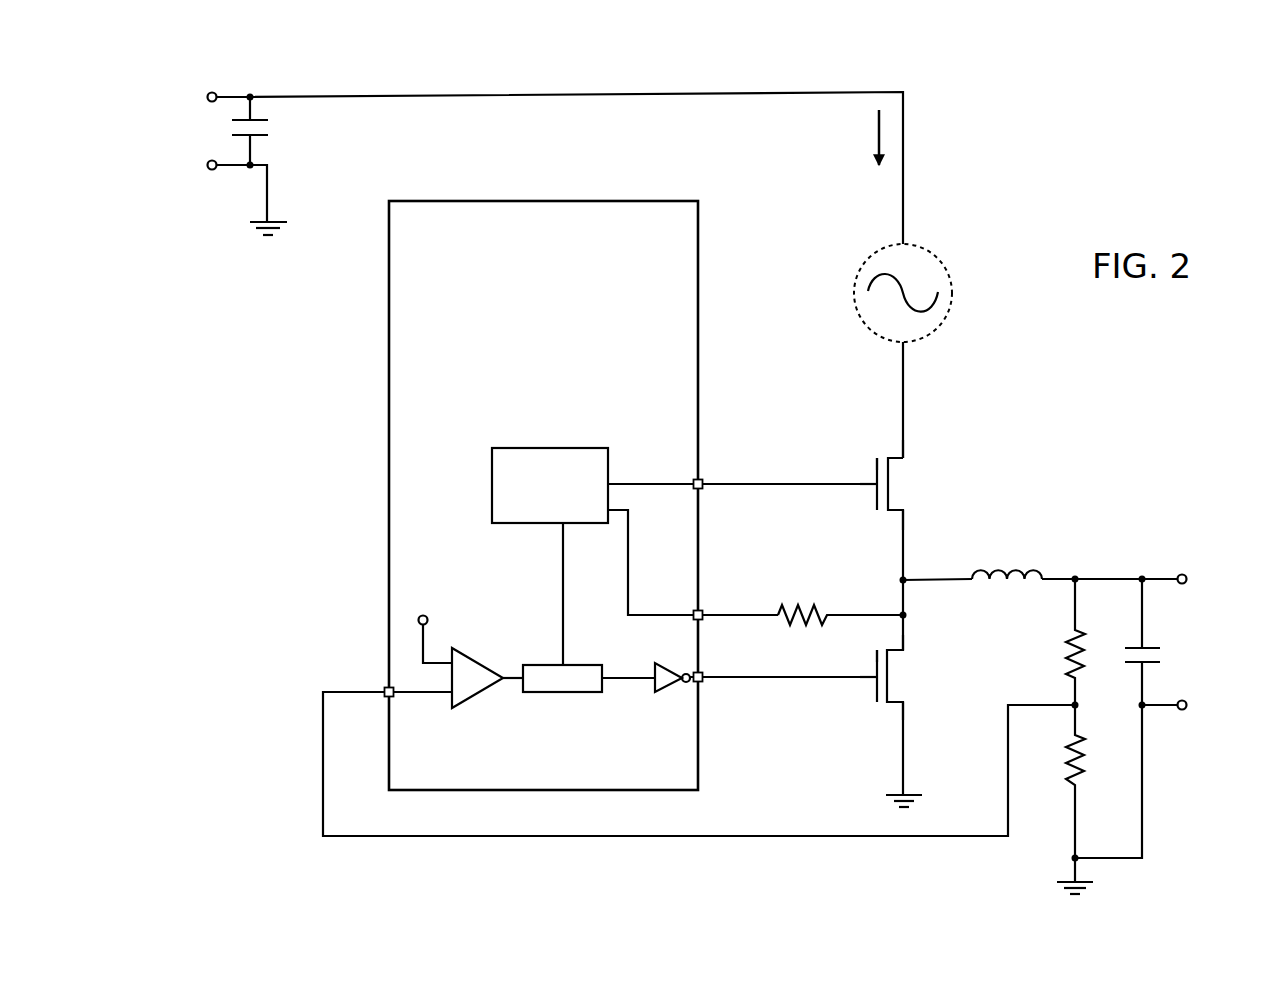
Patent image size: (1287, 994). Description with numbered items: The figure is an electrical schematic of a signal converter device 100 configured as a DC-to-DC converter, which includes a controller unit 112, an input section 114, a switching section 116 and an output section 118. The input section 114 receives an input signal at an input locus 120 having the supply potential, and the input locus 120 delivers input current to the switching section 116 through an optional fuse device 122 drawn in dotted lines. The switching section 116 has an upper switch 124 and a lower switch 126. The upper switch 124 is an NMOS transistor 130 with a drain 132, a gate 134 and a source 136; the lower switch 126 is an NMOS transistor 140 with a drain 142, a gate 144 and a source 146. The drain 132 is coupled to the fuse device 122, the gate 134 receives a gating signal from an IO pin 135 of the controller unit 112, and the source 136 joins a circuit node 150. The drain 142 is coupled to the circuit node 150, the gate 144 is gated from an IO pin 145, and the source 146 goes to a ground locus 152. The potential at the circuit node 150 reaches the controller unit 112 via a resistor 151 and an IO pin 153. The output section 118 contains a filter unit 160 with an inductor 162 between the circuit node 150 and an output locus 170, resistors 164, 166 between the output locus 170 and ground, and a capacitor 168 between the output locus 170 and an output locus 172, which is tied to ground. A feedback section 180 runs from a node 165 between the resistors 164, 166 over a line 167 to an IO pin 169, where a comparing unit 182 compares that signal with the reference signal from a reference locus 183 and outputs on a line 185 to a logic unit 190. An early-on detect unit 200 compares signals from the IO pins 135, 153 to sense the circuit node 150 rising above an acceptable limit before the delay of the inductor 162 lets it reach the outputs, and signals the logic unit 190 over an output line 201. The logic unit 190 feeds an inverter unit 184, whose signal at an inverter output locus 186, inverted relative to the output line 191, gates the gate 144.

The signal converter device 100 is at (836, 922).
The controller unit 112 is at (389, 438).
The input section 114 is at (894, 72).
The switching section 116 is at (954, 491).
The output section 118 is at (1133, 534).
The input locus 120 is at (230, 61).
The fuse device 122 is at (932, 250).
The upper switch 124 is at (821, 509).
The lower switch 126 is at (831, 704).
The NMOS transistor 130 is at (876, 460).
The drain 132 is at (903, 455).
The gate 134 is at (873, 483).
The IO pin 135 is at (701, 480).
The source 136 is at (903, 510).
The NMOS transistor 140 is at (877, 656).
The drain 142 is at (903, 650).
The gate 144 is at (876, 680).
The IO pin 145 is at (709, 681).
The source 146 is at (903, 705).
The circuit node 150 is at (906, 580).
The resistor 151 is at (781, 614).
The ground locus 152 is at (906, 795).
The IO pin 153 is at (701, 611).
The filter unit 160 is at (999, 616).
The inductor 162 is at (993, 575).
The resistor 164 is at (1070, 651).
The node 165 is at (1078, 708).
The resistor 166 is at (1068, 771).
The line 167 is at (734, 836).
The capacitor 168 is at (1161, 651).
The IO pin 169 is at (386, 688).
The output locus 170 is at (1179, 574).
The output locus 172 is at (1181, 712).
The feedback section 180 is at (491, 869).
The comparing unit 182 is at (480, 706).
The reference locus 183 is at (428, 622).
The inverter unit 184 is at (658, 668).
The line 185 is at (518, 681).
The inverter output locus 186 is at (688, 683).
The logic unit 190 is at (548, 694).
The output line 191 is at (610, 681).
The early-on detect unit 200 is at (533, 447).
The output line 201 is at (562, 578).